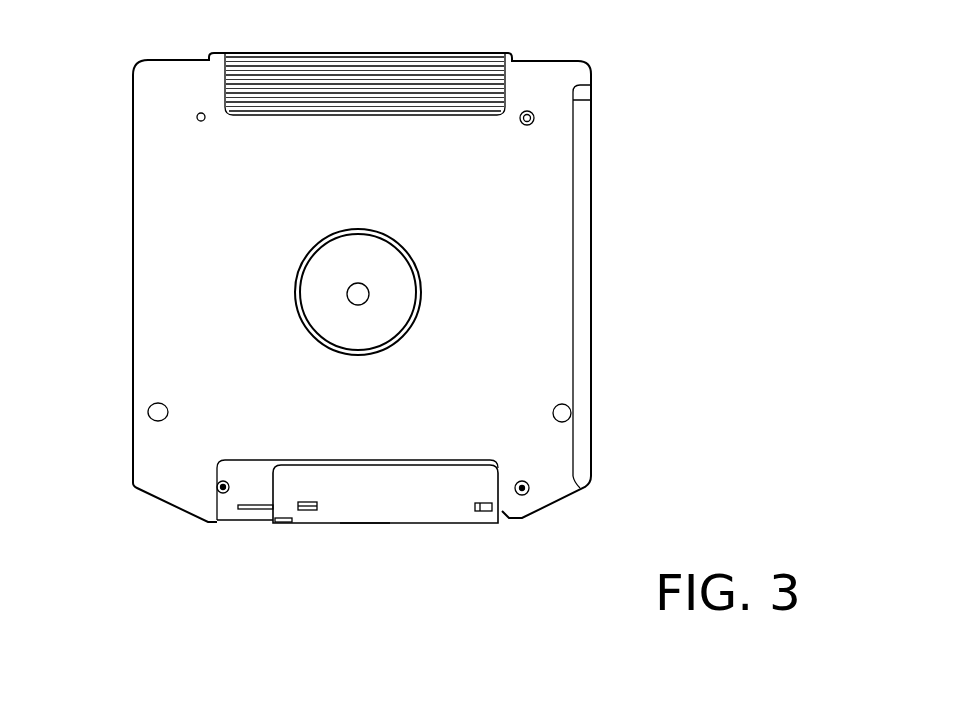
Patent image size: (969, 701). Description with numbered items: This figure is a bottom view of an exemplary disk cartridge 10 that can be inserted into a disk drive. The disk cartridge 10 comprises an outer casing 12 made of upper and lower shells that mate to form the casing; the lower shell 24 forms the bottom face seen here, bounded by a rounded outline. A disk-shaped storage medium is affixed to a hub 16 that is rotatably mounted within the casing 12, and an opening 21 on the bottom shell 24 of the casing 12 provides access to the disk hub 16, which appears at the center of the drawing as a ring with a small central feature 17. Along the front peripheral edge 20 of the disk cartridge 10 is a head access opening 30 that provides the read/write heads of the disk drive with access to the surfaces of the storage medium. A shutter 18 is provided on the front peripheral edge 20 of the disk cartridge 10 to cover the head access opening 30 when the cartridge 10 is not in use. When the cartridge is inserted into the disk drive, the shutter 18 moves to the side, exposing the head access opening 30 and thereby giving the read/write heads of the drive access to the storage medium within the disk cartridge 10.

The disk cartridge 10 is at (114, 63).
The outer casing 12 is at (133, 305).
The hub 16 is at (345, 252).
The hub opening 17 is at (362, 289).
The shutter 18 is at (430, 490).
The front peripheral edge 20 is at (252, 522).
The opening 21 is at (418, 268).
The lower shell 24 is at (547, 83).
The head access opening 30 is at (363, 540).